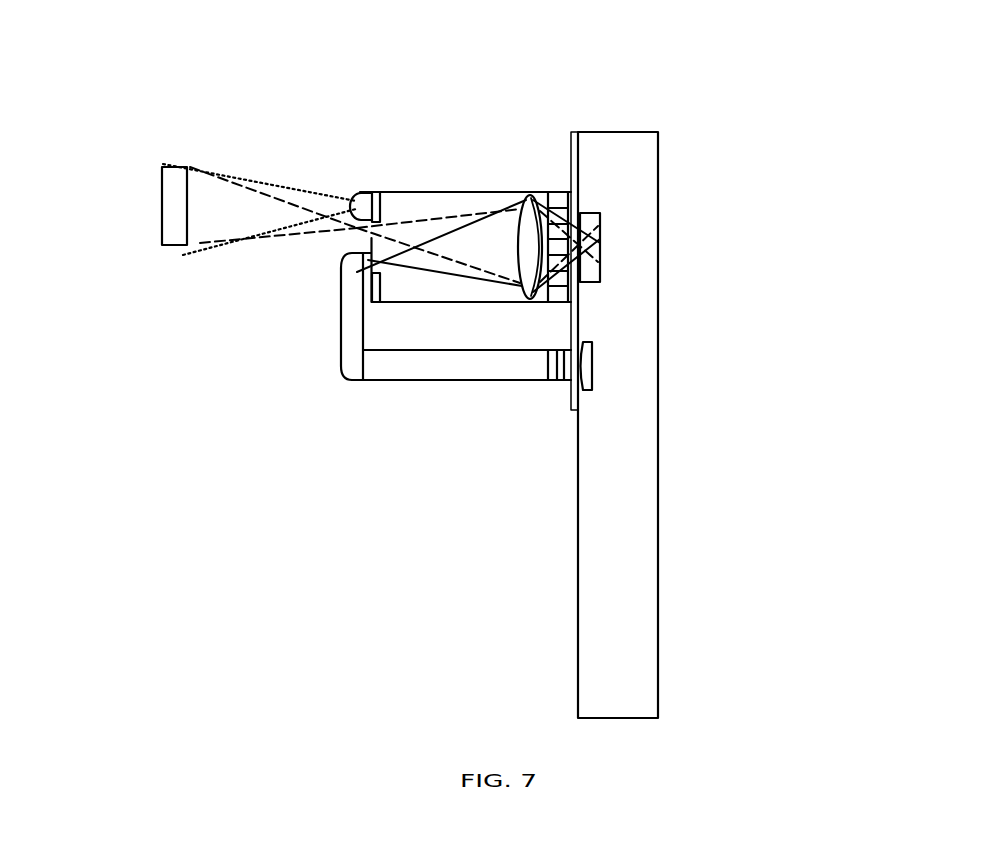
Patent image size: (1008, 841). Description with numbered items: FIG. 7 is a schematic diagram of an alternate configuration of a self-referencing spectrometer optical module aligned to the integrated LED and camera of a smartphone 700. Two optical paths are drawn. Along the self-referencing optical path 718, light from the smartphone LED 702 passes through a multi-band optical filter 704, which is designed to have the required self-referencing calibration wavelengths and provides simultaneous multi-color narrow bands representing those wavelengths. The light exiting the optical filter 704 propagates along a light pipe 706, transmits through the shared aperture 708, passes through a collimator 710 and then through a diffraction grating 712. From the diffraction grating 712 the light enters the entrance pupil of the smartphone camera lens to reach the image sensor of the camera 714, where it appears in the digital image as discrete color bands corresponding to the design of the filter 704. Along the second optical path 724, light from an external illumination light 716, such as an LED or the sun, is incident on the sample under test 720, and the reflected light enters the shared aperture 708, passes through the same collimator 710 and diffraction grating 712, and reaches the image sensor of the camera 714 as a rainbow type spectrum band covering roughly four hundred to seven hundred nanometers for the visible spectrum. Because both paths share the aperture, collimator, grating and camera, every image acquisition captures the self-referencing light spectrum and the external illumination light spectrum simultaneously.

The smartphone 700 is at (658, 610).
The smartphone LED 702 is at (592, 370).
The multi-band optical filter 704 is at (548, 366).
The light pipe 706 is at (341, 312).
The shared aperture 708 is at (381, 192).
The collimator 710 is at (516, 192).
The diffraction grating 712 is at (558, 192).
The camera 714 is at (600, 228).
The external illumination light 716 is at (356, 193).
The self-referencing optical path 718 is at (183, 256).
The sample under test 720 is at (162, 217).
The second optical path 724 is at (345, 233).